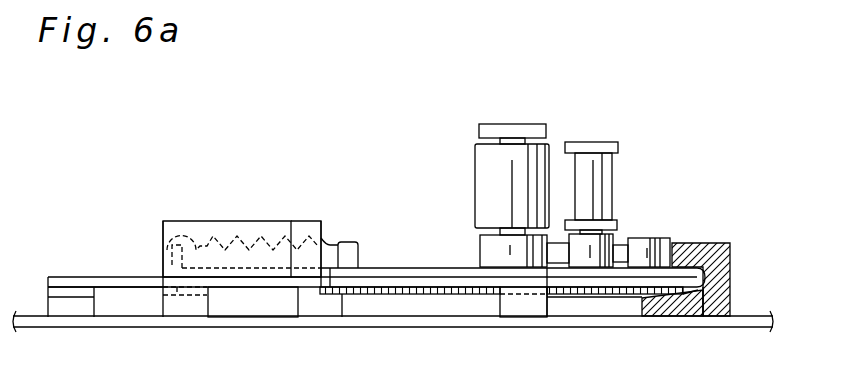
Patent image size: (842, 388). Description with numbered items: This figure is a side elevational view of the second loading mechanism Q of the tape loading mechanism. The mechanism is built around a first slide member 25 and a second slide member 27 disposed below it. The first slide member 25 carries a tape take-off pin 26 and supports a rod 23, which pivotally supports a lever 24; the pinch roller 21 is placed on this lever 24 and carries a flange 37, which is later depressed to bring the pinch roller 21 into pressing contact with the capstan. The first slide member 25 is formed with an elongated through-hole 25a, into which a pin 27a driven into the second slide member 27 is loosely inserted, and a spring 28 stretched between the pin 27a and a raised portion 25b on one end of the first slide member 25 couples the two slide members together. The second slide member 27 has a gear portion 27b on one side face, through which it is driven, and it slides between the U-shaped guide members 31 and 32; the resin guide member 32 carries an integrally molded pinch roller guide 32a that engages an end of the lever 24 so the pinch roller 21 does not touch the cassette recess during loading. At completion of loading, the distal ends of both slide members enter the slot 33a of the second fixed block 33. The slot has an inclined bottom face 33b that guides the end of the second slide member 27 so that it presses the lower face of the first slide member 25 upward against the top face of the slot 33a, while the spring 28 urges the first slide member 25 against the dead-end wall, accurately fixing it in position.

The pinch roller 21 is at (475, 158).
The rod 23 is at (655, 238).
The lever 24 is at (621, 250).
The first slide member 25 is at (446, 273).
The elongated through-hole 25a is at (372, 276).
The raised portion 25b is at (172, 268).
The tape take-off pin 26 is at (597, 142).
The second slide member 27 is at (484, 298).
The pin 27a is at (347, 241).
The gear portion 27b is at (402, 295).
The spring 28 is at (266, 238).
The guide member 31 is at (68, 276).
The guide member 32 is at (254, 289).
The pinch roller guide 32a is at (216, 221).
The second fixed block 33 is at (710, 243).
The slot 33a is at (699, 300).
The inclined bottom face 33b is at (640, 298).
The flange 37 is at (512, 127).
The second loading mechanism Q is at (304, 150).